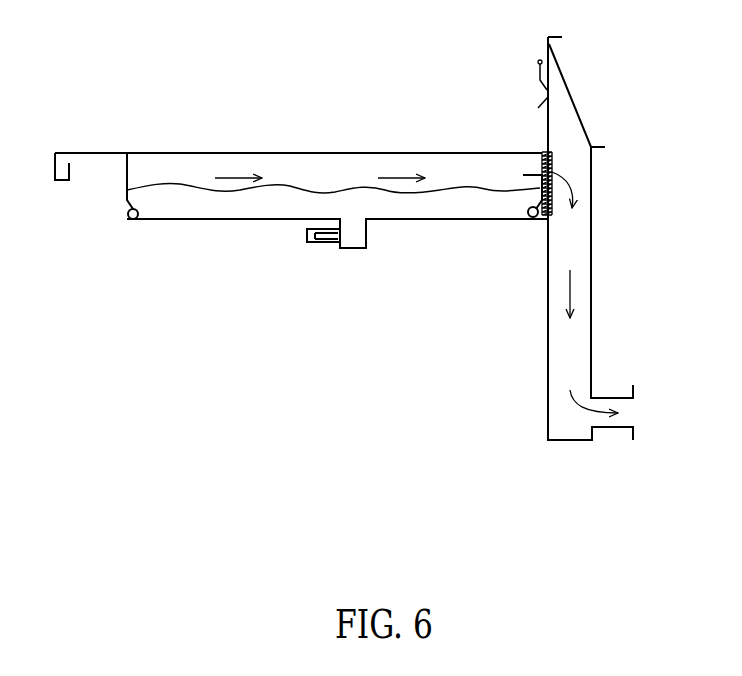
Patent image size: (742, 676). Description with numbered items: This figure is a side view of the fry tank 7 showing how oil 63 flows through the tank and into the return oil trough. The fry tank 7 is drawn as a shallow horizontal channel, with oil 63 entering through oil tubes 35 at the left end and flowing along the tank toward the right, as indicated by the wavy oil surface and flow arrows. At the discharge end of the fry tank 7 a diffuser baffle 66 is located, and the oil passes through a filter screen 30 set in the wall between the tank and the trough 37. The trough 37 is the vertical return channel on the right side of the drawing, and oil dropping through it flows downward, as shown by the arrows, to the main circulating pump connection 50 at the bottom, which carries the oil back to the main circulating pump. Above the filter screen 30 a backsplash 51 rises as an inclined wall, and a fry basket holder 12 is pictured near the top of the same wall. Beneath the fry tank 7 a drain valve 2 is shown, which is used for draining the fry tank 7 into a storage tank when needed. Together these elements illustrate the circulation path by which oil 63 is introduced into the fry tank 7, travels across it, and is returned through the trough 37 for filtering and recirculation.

The fry basket holder 12 is at (538, 75).
The backsplash 51 is at (550, 133).
The oil 63 is at (187, 183).
The diffuser baffle 66 is at (538, 202).
The filter screen 30 is at (552, 168).
The oil tubes 35 is at (127, 223).
The fry tank 7 is at (200, 221).
The drain valve 2 is at (322, 243).
The trough 37 is at (591, 283).
The main circulating pump connection 50 is at (633, 413).